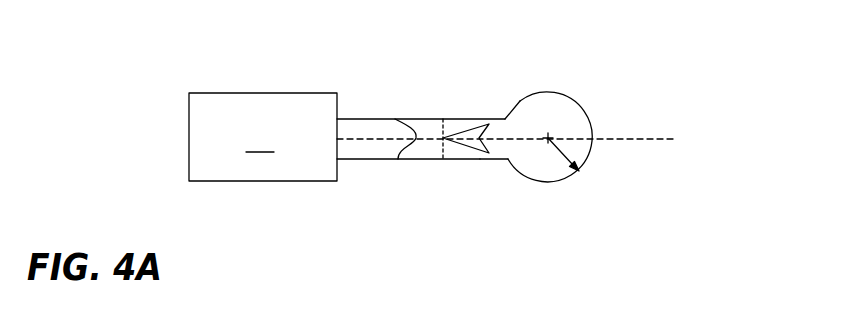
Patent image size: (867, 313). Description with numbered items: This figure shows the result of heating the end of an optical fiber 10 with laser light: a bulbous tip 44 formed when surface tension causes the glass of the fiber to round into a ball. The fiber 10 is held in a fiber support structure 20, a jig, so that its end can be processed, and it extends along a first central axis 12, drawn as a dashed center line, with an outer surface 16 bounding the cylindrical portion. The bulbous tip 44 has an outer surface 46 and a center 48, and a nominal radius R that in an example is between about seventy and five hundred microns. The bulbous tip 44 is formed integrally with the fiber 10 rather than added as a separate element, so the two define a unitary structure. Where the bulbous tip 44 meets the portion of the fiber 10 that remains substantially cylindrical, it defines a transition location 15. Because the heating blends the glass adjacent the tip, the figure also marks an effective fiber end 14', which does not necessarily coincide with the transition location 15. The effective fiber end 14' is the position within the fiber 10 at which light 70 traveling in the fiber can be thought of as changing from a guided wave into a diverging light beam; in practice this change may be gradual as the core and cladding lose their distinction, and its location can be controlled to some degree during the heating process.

The optical fiber 10 is at (343, 62).
The first (central) axis 12 is at (357, 138).
The effective fiber end 14' is at (464, 111).
The transition location 15 is at (502, 162).
The outer surface 16 is at (358, 159).
The fiber support structure 20 is at (263, 137).
The bulbous tip 44 is at (552, 175).
The outer surface 46 is at (535, 94).
The center 48 is at (546, 137).
The light 70 is at (446, 119).
The radius R is at (565, 155).